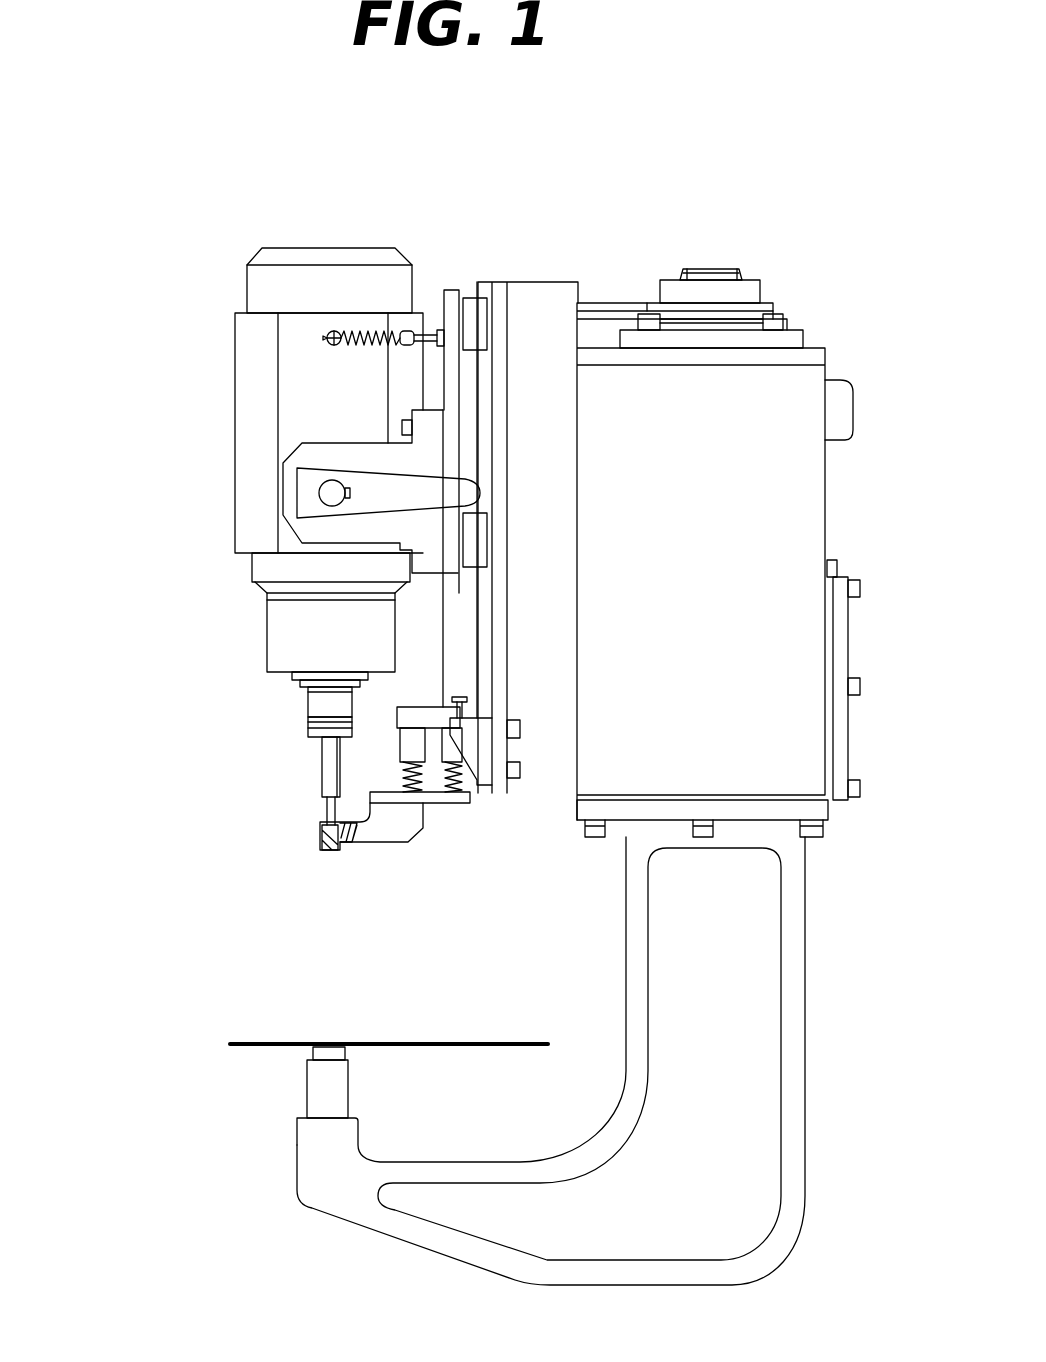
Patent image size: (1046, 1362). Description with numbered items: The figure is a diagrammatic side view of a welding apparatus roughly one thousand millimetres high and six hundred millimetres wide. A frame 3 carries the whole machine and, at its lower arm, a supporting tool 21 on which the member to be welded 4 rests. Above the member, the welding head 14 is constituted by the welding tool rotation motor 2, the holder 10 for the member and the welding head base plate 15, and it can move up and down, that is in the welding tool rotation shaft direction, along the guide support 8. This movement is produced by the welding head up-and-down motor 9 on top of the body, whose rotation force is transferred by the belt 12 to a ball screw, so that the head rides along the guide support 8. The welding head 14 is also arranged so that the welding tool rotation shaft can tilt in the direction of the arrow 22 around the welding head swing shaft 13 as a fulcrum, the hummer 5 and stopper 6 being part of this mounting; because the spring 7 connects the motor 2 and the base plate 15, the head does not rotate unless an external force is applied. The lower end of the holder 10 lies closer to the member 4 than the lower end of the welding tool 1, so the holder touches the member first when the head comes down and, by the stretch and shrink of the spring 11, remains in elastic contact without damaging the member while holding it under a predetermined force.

The welding tool 1 is at (326, 812).
The welding tool rotation motor 2 is at (285, 288).
The frame 3 is at (770, 1113).
The member to be welded 4 is at (287, 1040).
The hummer 5 is at (305, 478).
The stopper 6 is at (465, 694).
The spring 7 is at (360, 327).
The guide support 8 is at (487, 288).
The welding head up-and-down motor 9 is at (748, 290).
The holder for the member 10 is at (370, 837).
The spring 11 is at (430, 803).
The belt 12 is at (608, 312).
The welding head swing shaft 13 is at (319, 493).
The welding head 14 is at (97, 232).
The welding head base plate 15 is at (455, 295).
The supporting tool for the member 21 is at (317, 1052).
The arrow 22 is at (361, 866).